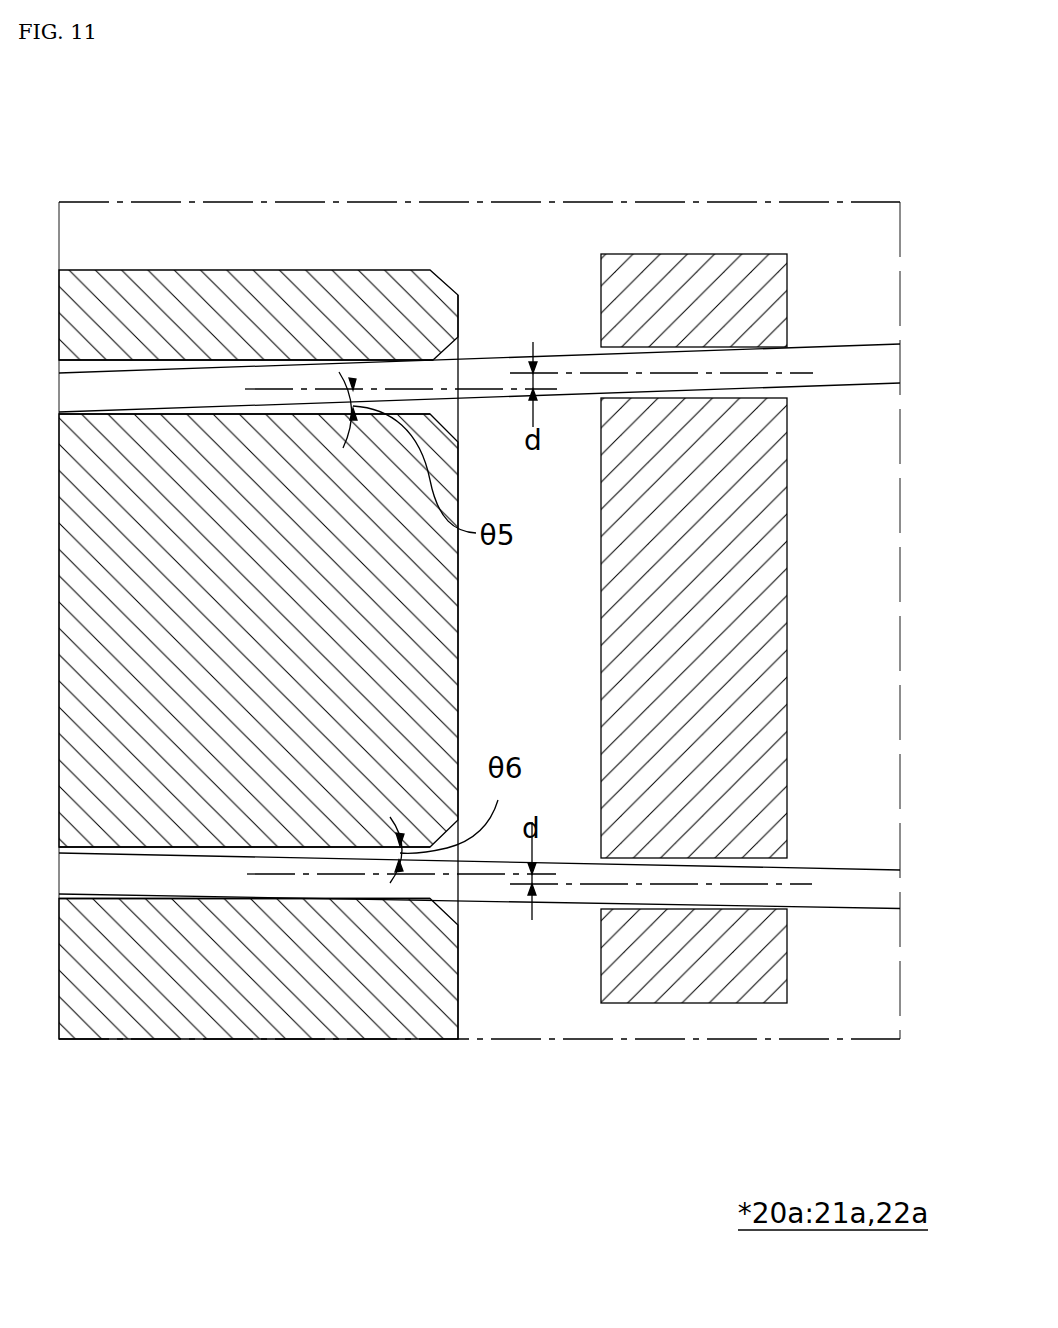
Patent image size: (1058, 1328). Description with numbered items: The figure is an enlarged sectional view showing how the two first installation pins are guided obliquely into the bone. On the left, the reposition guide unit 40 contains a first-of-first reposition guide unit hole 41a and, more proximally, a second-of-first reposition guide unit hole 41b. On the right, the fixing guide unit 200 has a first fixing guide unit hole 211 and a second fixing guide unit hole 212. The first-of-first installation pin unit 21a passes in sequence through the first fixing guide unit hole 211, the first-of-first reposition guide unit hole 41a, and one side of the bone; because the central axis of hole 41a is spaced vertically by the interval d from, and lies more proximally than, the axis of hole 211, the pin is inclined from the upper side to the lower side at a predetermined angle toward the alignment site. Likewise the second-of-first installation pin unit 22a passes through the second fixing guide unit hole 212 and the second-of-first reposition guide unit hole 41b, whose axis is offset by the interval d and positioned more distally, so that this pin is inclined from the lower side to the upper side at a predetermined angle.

The support block 40 is at (252, 303).
The first-of-first reposition guide unit hole 41a is at (146, 388).
The second-of-first reposition guide unit hole 41b is at (176, 884).
The first-of-first installation pin unit 21a is at (845, 372).
The second-of-first installation pin unit 22a is at (847, 892).
The fixing guide unit 200 is at (637, 227).
The first fixing guide unit hole 211 is at (732, 369).
The second fixing guide unit hole 212 is at (684, 890).